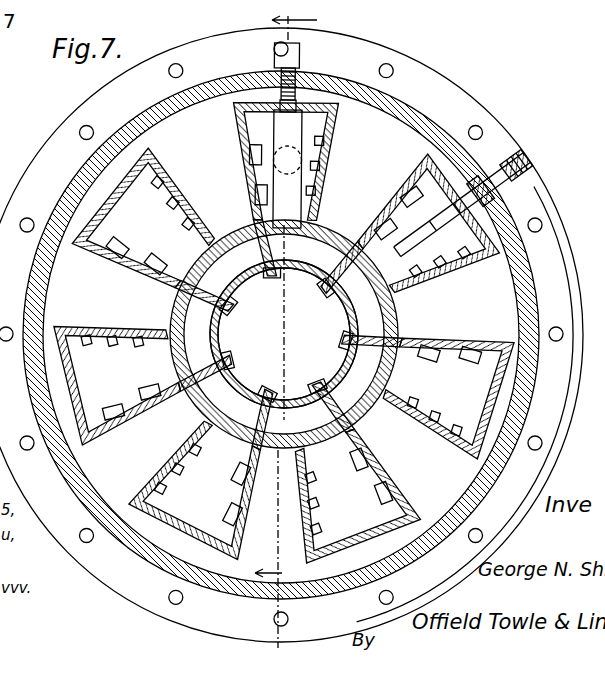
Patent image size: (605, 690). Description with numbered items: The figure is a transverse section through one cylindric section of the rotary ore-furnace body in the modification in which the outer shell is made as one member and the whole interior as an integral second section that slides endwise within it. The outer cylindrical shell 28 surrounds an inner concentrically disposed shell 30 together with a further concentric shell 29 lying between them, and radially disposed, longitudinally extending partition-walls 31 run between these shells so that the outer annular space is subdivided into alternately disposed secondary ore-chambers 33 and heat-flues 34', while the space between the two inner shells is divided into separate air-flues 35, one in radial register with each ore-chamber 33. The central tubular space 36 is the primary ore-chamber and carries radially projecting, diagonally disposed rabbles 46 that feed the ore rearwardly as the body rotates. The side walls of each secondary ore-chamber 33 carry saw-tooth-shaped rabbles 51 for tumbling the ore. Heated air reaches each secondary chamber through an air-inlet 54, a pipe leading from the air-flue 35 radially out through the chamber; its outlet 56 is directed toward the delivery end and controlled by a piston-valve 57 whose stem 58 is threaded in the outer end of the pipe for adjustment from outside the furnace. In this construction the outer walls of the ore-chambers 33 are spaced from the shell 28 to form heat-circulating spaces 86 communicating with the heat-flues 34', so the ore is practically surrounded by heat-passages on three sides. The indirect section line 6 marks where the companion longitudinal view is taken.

The heat-circulating spaces 86 is at (80, 207).
The outer cylindrical shell 28 is at (397, 106).
The inner shell 30 is at (326, 238).
The ore-chambers 33 is at (318, 128).
The heat-flues 34' is at (232, 232).
The air-flues 35 is at (284, 334).
The air-inlet 54 is at (288, 335).
The partition-walls 31 is at (322, 294).
The rabbles 46 is at (280, 286).
The hub bore 29 is at (332, 303).
The central tubular space 36 is at (283, 333).
The rabbles 51 is at (168, 200).
The outlet 56 is at (438, 277).
The piston-valve 57 is at (483, 236).
The stem 58 is at (496, 194).
The section line 6 is at (291, 330).